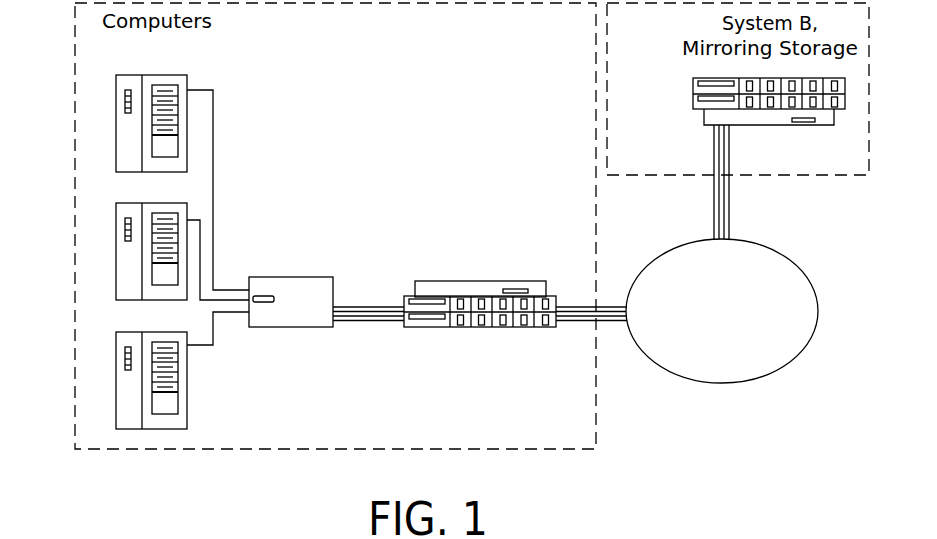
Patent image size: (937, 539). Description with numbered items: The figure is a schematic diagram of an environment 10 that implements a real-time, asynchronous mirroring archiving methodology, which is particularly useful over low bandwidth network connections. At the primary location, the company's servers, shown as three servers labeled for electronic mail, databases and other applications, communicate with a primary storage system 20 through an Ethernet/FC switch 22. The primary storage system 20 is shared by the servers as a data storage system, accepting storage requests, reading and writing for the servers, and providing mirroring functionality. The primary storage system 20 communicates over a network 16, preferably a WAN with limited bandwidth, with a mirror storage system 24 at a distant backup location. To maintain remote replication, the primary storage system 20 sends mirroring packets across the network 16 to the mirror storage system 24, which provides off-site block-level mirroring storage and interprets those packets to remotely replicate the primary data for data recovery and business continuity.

The environment 10 is at (706, 441).
The network 16 is at (790, 258).
The primary storage system 20 is at (432, 327).
The Ethernet/FC switch 22 is at (298, 327).
The mirror storage system 24 is at (693, 80).